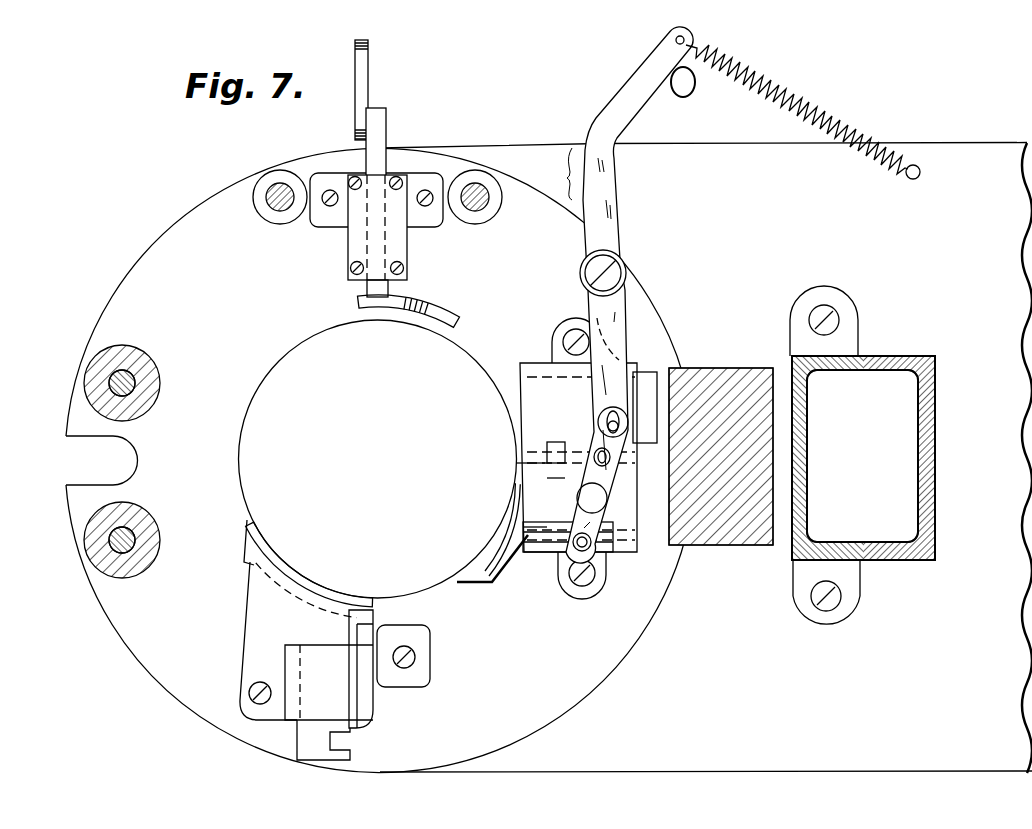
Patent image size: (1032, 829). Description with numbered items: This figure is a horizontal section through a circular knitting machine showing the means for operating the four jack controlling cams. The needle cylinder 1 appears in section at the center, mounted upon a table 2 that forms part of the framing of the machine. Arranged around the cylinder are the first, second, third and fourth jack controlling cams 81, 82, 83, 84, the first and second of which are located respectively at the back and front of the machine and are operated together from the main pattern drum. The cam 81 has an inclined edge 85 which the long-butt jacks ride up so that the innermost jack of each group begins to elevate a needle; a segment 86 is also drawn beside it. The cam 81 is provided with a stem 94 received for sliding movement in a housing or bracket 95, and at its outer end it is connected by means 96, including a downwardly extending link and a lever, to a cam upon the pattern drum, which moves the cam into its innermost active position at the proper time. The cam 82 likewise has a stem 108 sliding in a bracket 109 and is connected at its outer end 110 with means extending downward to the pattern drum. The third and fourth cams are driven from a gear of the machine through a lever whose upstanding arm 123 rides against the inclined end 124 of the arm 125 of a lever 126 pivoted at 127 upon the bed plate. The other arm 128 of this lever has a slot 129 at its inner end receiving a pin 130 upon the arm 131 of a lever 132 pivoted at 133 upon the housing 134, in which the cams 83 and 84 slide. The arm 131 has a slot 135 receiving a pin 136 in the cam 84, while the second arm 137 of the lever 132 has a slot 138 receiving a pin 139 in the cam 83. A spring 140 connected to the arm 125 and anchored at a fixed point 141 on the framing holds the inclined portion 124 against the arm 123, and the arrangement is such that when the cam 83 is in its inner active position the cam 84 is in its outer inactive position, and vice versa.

The needle cylinder 1 is at (278, 358).
The table 2 is at (168, 232).
The jack controlling cam 81 is at (359, 303).
The jack controlling cam 82 is at (272, 578).
The jack controlling cam 83 is at (503, 548).
The jack controlling cam 84 is at (552, 366).
The inclined edge 85 is at (424, 306).
The arcuate segment 86 is at (249, 540).
The stem 94 is at (367, 292).
The housing or bracket 95 is at (360, 242).
The connecting means 96 is at (349, 54).
The stem 108 is at (312, 630).
The bracket 109 is at (290, 660).
The outer end 110 is at (343, 748).
The lever arm 123 is at (690, 88).
The inclined end 124 is at (652, 97).
The lever arm 125 is at (606, 191).
The lever 126 is at (551, 174).
The pivot 127 is at (623, 270).
The lever arm 128 is at (617, 312).
The slot 129 is at (615, 411).
The pin 130 is at (605, 413).
The lever arm 131 is at (590, 478).
The lever 132 is at (570, 492).
The pivot 133 is at (598, 498).
The housing 134 is at (626, 487).
The slot 135 is at (606, 435).
The pin 136 is at (595, 455).
The lever arm 137 is at (590, 522).
The slot 138 is at (585, 549).
The pin 139 is at (591, 540).
The spring 140 is at (780, 96).
The fixed point 141 is at (910, 182).